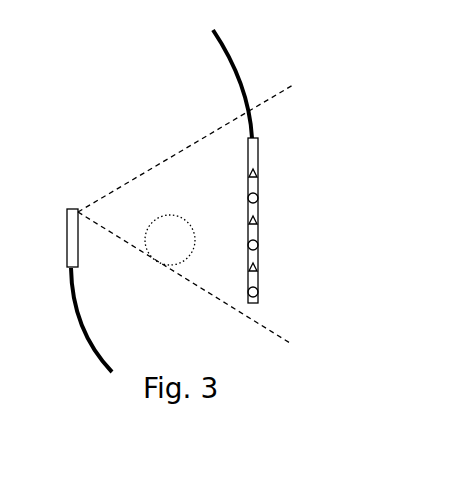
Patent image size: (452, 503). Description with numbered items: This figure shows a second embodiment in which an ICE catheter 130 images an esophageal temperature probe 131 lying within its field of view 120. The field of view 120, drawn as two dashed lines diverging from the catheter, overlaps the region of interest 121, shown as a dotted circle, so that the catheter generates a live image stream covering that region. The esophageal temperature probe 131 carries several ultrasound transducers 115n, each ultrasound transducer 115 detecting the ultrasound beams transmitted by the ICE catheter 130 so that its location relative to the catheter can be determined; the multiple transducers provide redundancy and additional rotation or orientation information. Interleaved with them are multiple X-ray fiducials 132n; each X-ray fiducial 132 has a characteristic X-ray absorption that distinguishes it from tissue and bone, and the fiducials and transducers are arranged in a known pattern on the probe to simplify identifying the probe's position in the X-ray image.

The ICE catheter 130 is at (67, 212).
The field of view 120 is at (162, 160).
The region of interest 121 is at (143, 250).
The esophageal temperature probe 131 is at (260, 147).
The X-ray fiducials 132n is at (206, 220).
The X-ray fiducial 132 is at (247, 270).
The ultrasound transducers 115n is at (296, 245).
The ultrasound transducer 115 is at (260, 199).